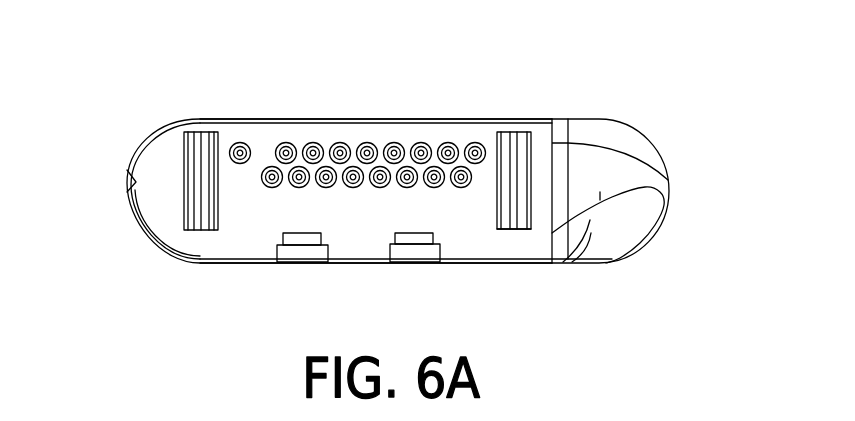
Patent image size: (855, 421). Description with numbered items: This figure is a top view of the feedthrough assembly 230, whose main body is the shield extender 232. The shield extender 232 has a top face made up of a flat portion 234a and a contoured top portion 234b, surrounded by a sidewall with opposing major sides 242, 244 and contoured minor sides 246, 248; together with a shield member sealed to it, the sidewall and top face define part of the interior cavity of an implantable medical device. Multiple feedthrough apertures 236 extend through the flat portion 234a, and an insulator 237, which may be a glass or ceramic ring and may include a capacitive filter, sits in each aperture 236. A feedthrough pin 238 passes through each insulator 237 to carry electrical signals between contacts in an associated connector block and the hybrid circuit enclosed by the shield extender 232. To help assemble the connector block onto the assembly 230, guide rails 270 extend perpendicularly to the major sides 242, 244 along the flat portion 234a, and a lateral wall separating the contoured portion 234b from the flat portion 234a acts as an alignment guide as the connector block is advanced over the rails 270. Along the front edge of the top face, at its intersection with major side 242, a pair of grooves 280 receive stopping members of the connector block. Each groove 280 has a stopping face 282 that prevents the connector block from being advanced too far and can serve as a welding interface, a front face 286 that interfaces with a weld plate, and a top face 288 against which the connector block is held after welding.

The feedthrough assembly 230 is at (420, 30).
The shield extender 232 is at (193, 118).
The flat portion of top face 234a is at (412, 133).
The contoured top portion of top face 234b is at (600, 192).
The feedthrough aperture 236 is at (280, 148).
The insulator 237 is at (313, 147).
The feedthrough pin 238 is at (250, 147).
The major side 242 is at (453, 265).
The major side 244 is at (535, 118).
The contoured minor side 246 is at (668, 197).
The contoured minor side 248 is at (127, 171).
The guide rail 270 is at (515, 229).
The groove 280 is at (387, 250).
The stopping face 282 is at (303, 234).
The front face 286 is at (283, 263).
The top face of groove 288 is at (410, 258).